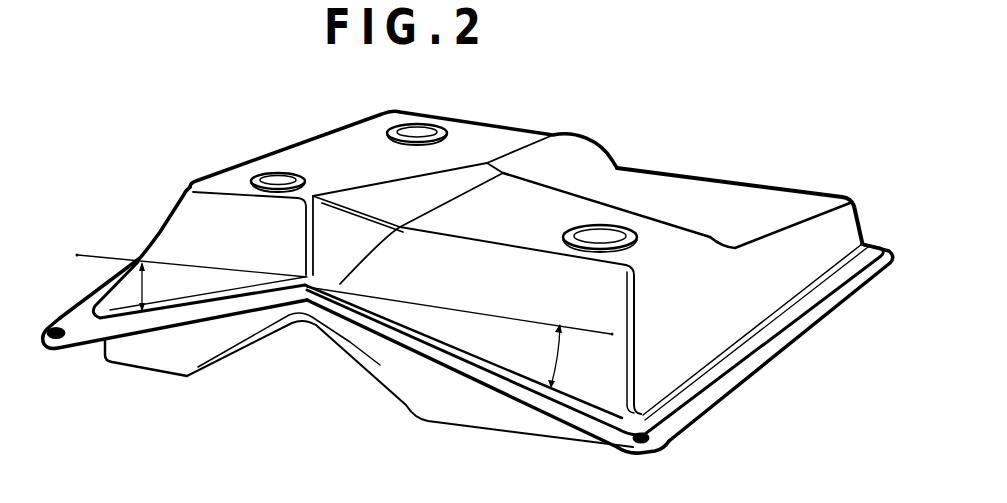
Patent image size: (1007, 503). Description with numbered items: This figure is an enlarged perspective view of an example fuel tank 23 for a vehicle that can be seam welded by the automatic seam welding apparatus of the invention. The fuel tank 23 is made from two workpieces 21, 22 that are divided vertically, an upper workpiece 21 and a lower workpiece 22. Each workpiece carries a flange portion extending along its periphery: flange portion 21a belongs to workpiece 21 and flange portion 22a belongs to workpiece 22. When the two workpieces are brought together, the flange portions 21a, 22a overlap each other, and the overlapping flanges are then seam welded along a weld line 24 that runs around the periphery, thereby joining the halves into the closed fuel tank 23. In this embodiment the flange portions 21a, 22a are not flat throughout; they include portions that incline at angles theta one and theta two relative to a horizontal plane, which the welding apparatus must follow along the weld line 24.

The workpiece 21 is at (578, 152).
The flange portion 21a is at (70, 323).
The workpiece 22 is at (497, 413).
The flange portion 22a is at (82, 348).
The fuel tank 23 is at (708, 172).
The weld line 24 is at (711, 384).